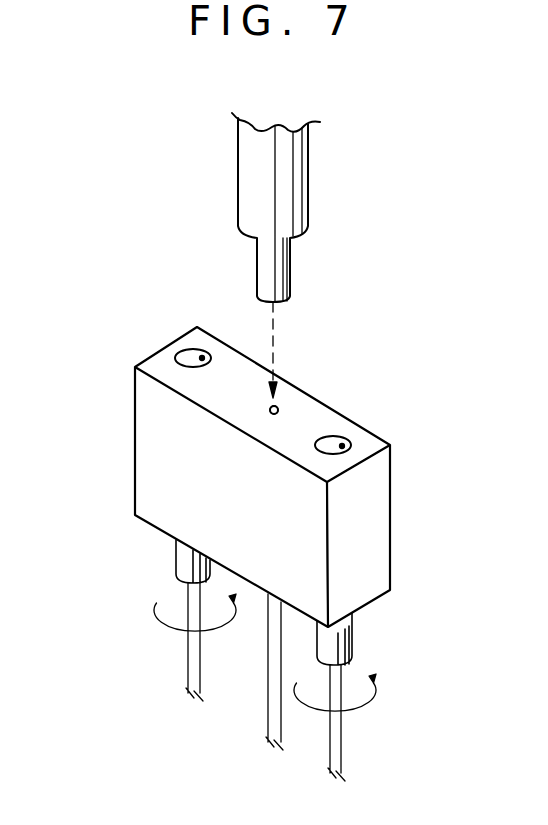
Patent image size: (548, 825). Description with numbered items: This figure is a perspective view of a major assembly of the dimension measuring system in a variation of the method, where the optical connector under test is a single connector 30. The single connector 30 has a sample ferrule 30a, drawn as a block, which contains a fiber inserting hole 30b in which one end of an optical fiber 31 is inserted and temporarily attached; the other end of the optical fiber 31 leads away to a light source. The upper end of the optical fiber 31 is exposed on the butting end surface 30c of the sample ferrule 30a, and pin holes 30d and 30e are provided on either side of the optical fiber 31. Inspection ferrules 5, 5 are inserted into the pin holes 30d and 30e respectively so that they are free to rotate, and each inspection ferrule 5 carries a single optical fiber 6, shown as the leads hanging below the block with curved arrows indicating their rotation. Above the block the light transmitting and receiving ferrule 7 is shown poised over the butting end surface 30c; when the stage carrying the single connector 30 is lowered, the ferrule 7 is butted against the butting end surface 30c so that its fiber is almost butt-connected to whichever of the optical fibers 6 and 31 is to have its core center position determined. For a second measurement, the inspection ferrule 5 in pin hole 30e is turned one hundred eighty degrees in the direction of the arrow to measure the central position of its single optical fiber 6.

The light transmitting and receiving ferrule 7 is at (289, 213).
The single connector 30 is at (261, 452).
The sample ferrule 30a is at (383, 522).
The fiber inserting hole 30b is at (270, 409).
The butting end surface 30c is at (320, 412).
The pin hole 30d is at (183, 354).
The pin hole 30e is at (353, 452).
The optical fiber 31 is at (278, 408).
The inspection ferrule 5 is at (182, 565).
The single optical fiber 6 is at (202, 357).